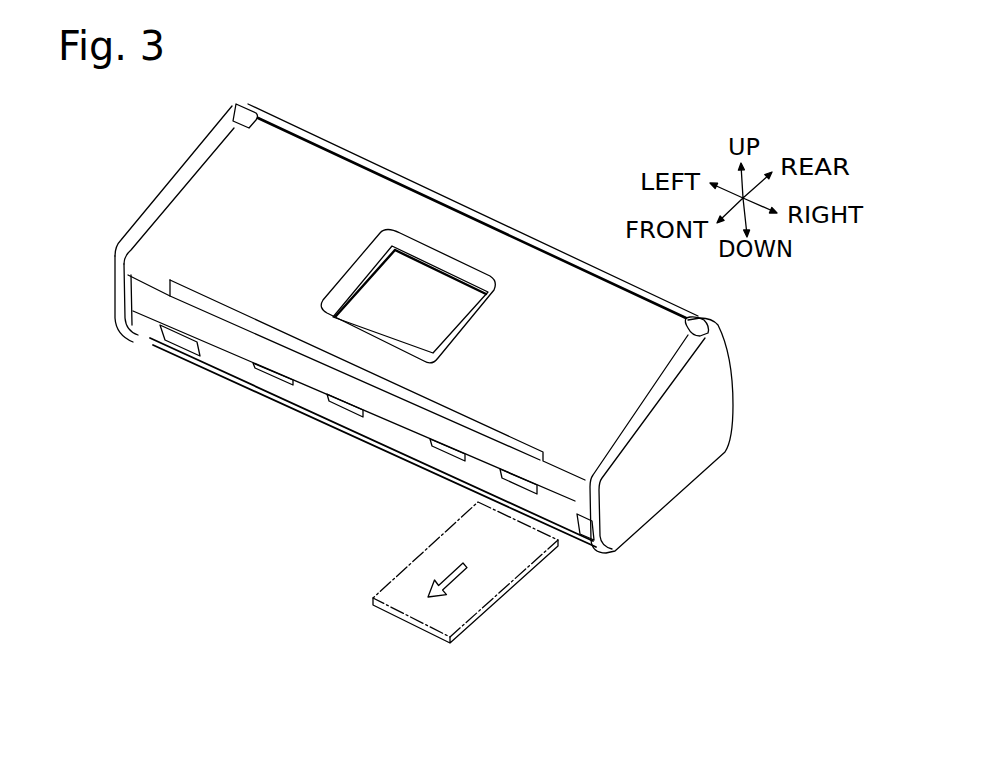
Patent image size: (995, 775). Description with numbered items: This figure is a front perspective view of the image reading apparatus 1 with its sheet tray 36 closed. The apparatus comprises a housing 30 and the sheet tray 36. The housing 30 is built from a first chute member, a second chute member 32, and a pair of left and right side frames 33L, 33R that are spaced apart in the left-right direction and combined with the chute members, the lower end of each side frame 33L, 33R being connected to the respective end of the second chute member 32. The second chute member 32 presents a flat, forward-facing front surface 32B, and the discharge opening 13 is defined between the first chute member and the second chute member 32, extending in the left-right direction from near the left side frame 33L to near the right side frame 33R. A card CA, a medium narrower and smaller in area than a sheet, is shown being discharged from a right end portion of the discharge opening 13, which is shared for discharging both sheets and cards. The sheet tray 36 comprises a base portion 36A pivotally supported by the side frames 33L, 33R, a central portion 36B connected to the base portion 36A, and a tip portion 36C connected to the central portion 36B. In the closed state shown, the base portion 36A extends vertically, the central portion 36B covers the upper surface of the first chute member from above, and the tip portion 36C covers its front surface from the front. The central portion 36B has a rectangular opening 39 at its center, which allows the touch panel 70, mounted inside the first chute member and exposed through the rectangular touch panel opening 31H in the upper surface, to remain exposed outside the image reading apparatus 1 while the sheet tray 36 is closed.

The image reading apparatus 1 is at (596, 208).
The discharge opening 13 is at (306, 392).
The housing 30 is at (692, 498).
The touch panel opening 31H is at (442, 280).
The second chute member 32 is at (165, 331).
The front surface 32B is at (243, 368).
The left side frame 33L is at (120, 243).
The right side frame 33R is at (710, 403).
The sheet tray 36 is at (210, 192).
The base portion 36A is at (333, 146).
The central portion 36B is at (228, 162).
The tip portion 36C is at (152, 302).
The opening 39 is at (398, 252).
The touch panel 70 is at (438, 324).
The card CA is at (410, 587).